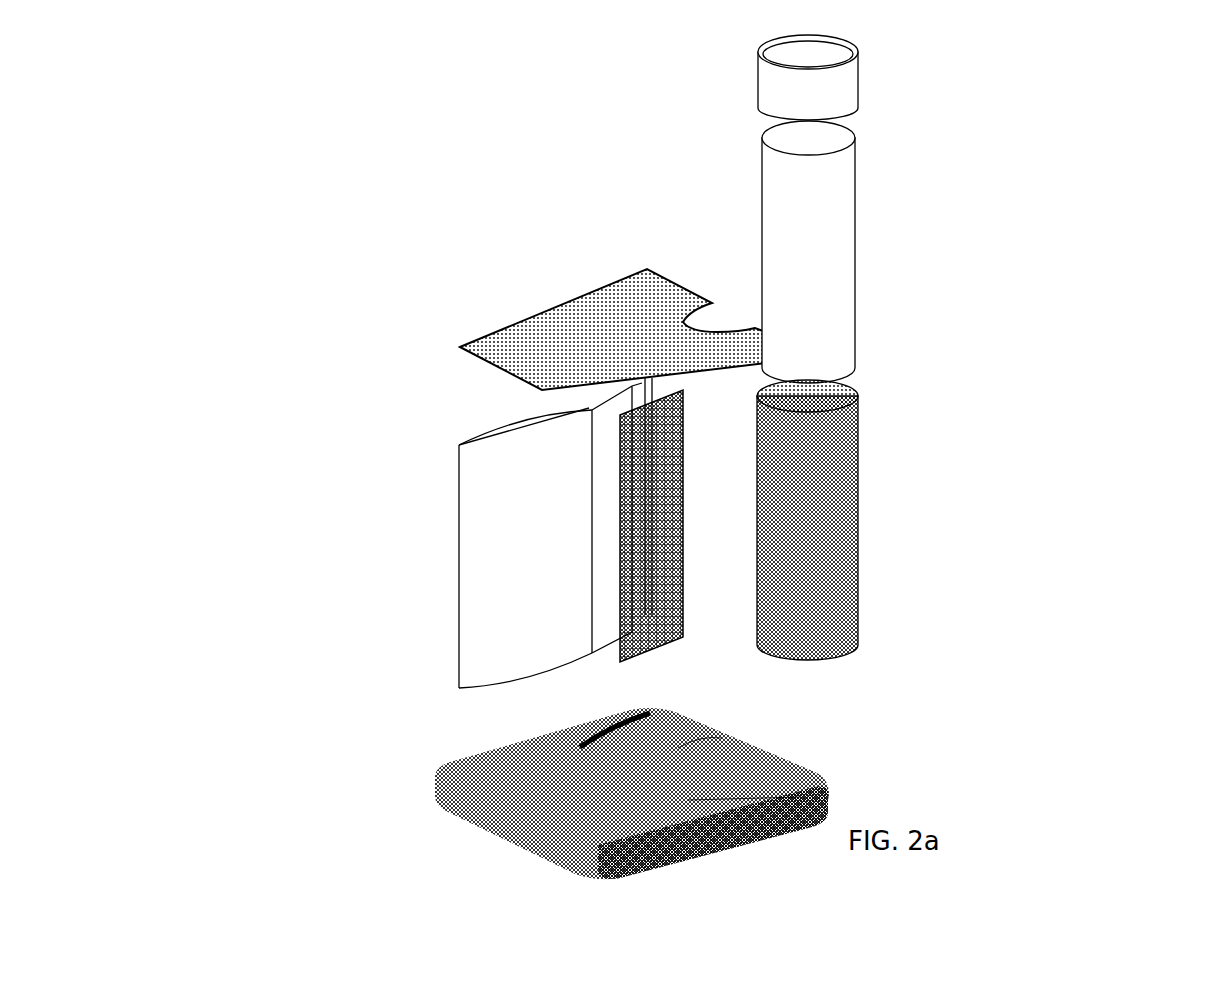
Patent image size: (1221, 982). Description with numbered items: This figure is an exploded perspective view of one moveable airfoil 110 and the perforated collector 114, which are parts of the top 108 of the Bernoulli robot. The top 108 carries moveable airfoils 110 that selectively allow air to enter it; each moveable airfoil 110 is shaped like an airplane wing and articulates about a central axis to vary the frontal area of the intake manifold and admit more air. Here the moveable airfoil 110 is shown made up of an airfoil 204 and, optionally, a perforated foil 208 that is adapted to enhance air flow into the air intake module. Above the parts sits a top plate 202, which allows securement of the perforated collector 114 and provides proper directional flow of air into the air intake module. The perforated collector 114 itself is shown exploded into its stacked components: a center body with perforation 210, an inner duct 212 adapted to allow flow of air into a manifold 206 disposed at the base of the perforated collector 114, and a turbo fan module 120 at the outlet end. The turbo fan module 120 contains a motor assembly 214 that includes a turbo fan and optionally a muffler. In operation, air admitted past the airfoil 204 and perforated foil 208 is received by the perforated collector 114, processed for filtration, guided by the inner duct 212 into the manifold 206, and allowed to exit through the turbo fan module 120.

The top 108 is at (270, 179).
The moveable airfoil 110 is at (434, 417).
The perforated collector 114 is at (708, 190).
The turbo fan module 120 is at (741, 84).
The top plate 202 is at (462, 347).
The airfoil 204 is at (458, 555).
The manifold 206 is at (440, 771).
The perforated foil 208 is at (683, 640).
The center body with perforation 210 is at (858, 558).
The inner duct 212 is at (855, 228).
The motor assembly 214 is at (850, 88).